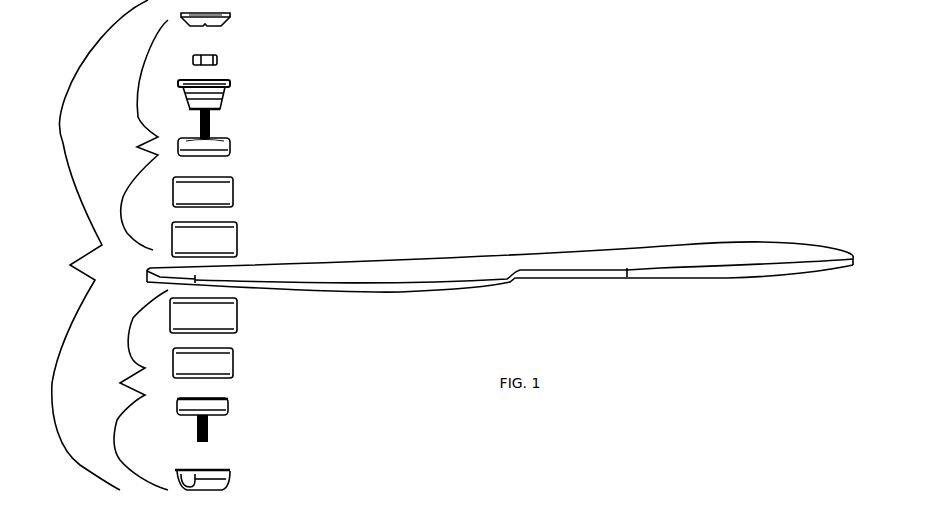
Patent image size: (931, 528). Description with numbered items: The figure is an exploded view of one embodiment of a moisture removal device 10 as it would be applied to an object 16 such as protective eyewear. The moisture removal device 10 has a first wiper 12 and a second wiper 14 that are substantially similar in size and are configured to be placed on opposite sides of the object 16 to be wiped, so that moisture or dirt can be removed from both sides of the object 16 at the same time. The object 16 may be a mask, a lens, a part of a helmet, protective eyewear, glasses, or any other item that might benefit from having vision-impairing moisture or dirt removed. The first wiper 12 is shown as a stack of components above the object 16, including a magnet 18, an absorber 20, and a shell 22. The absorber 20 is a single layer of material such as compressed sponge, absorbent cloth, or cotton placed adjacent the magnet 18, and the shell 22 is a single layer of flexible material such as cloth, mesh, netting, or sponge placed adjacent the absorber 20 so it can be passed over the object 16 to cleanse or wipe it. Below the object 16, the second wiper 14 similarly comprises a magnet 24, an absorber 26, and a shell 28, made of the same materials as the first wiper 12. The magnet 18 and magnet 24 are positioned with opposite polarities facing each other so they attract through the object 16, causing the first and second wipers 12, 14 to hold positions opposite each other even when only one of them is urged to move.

The moisture removal device 10 is at (89, 245).
The first wiper 12 is at (137, 135).
The second wiper 14 is at (129, 390).
The object 16 is at (420, 270).
The magnet 18 is at (222, 150).
The absorber 20 is at (212, 195).
The shell 22 is at (208, 242).
The magnet 24 is at (212, 407).
The absorber 26 is at (220, 365).
The shell 28 is at (218, 317).